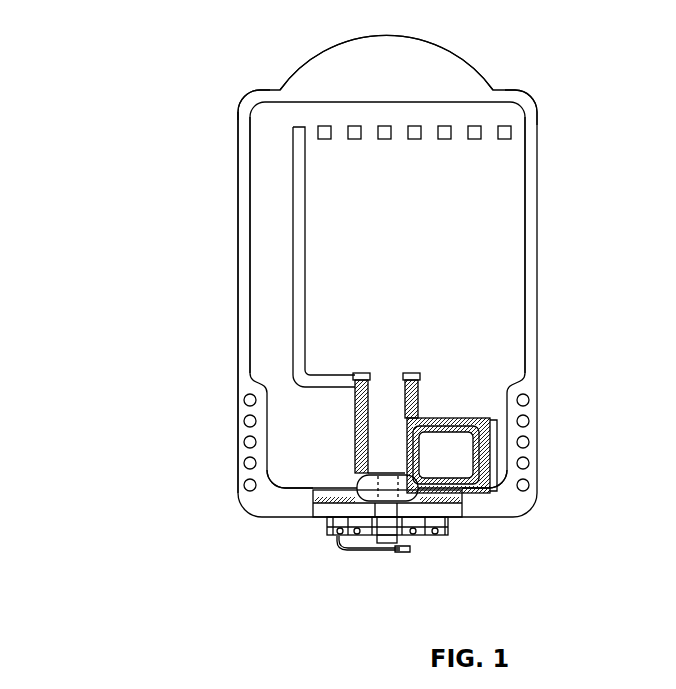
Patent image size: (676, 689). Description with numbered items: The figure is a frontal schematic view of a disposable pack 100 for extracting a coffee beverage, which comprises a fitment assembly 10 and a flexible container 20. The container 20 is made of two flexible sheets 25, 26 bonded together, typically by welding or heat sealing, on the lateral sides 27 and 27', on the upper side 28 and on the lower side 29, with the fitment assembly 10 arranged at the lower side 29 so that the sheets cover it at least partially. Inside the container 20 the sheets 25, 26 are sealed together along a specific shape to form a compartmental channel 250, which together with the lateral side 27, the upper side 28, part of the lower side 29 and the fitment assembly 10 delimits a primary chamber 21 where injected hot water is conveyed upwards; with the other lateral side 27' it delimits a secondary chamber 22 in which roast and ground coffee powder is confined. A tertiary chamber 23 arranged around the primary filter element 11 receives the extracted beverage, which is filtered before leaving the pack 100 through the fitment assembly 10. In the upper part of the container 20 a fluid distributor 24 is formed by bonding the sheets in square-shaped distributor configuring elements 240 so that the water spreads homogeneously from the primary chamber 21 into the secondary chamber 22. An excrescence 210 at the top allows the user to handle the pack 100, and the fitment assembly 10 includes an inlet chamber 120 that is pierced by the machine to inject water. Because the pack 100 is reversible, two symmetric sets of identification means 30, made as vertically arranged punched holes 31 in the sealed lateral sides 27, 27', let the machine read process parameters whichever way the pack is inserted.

The pack 100 is at (120, 303).
The container 20 is at (238, 157).
The primary chamber 21 is at (267, 233).
The secondary chamber 22 is at (490, 218).
The tertiary chamber 23 is at (380, 438).
The fluid distributor 24 is at (513, 133).
The flexible sheet 25 is at (522, 93).
The flexible sheet 26 is at (526, 122).
The lateral side 27 is at (244, 411).
The lateral side 27' is at (533, 410).
The upper side 28 is at (250, 103).
The lower side 29 is at (287, 498).
The identification means 30 is at (242, 435).
The punched holes 31 is at (528, 418).
The fitment assembly 10 is at (447, 530).
The primary filter element 11 is at (463, 464).
The inlet chamber 120 is at (348, 502).
The excrescence 210 is at (407, 47).
The distributor configuring elements 240 is at (357, 127).
The compartmental channel 250 is at (300, 195).